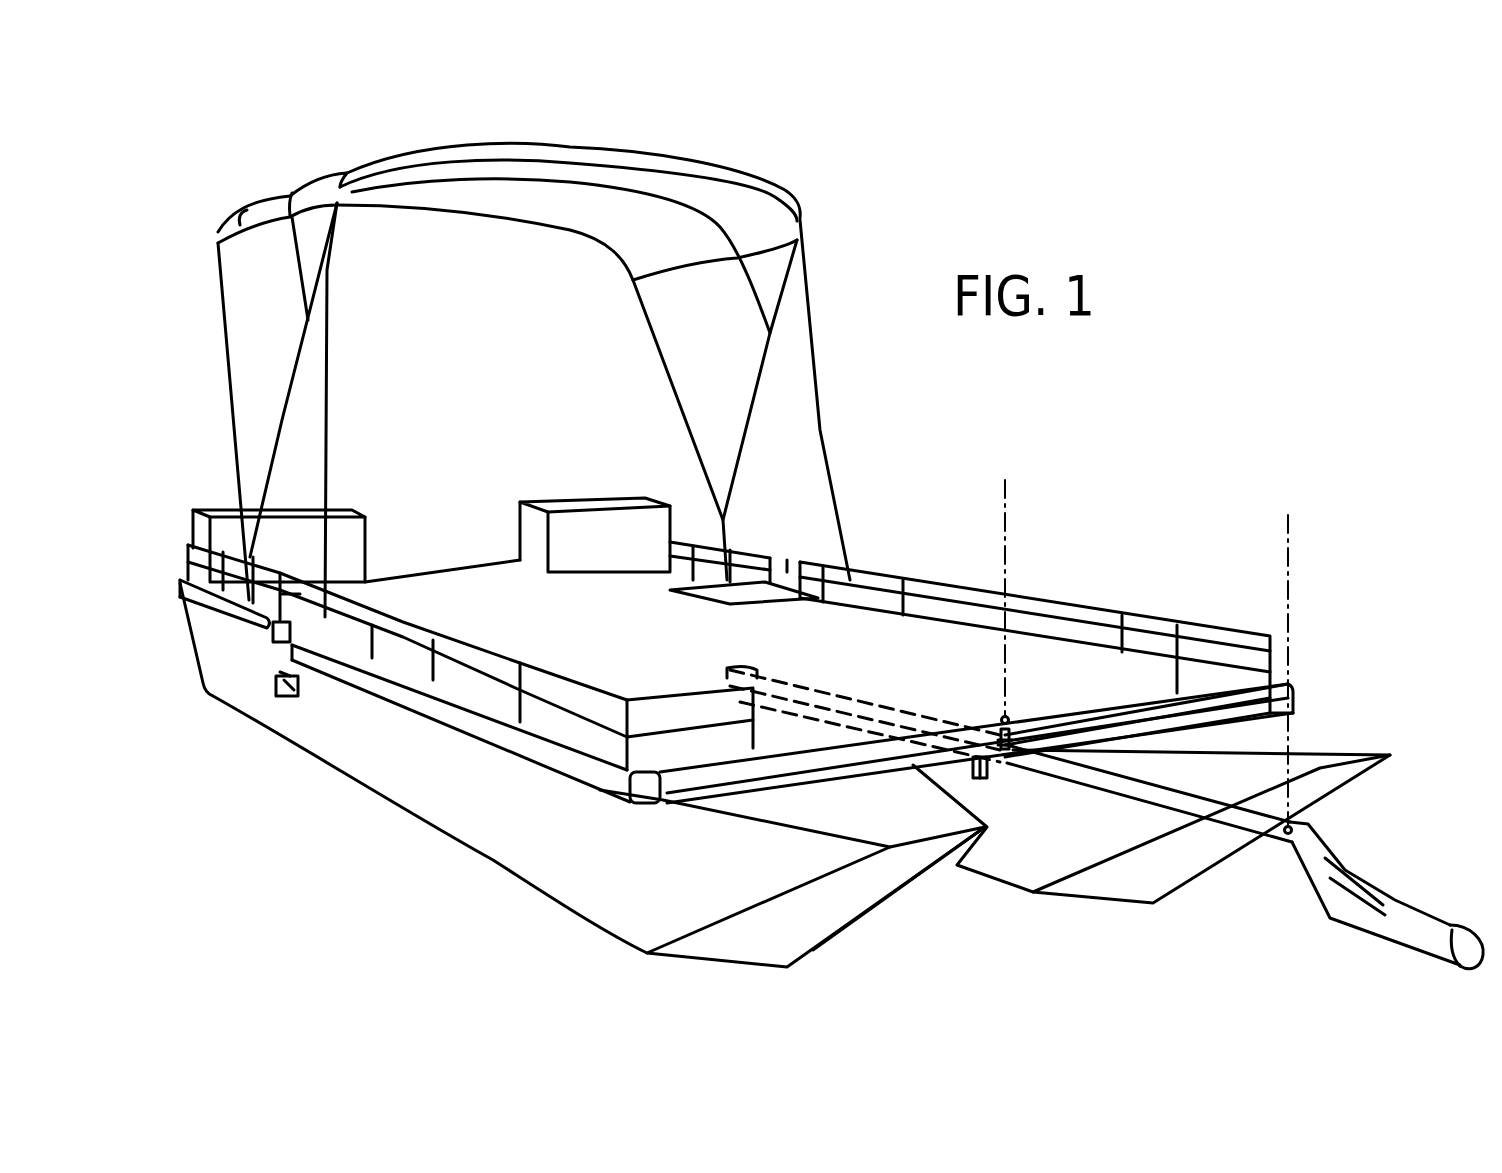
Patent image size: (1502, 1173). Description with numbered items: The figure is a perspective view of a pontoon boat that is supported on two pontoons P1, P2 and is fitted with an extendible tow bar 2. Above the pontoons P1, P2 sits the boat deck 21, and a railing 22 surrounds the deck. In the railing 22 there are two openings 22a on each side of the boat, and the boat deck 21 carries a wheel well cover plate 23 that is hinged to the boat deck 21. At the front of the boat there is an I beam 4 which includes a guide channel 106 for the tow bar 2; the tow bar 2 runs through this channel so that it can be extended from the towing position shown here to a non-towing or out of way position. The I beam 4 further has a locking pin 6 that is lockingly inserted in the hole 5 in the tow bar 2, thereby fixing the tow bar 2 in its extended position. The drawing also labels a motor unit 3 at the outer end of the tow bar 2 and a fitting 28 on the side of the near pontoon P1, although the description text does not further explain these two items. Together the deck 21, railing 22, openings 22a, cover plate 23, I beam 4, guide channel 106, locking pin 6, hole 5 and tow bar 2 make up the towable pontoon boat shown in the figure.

The extendible tow bar 2 is at (1210, 830).
The outboard motor 3 is at (1465, 928).
The I beam 4 is at (1237, 710).
The hole 5 is at (1297, 827).
The locking pin 6 is at (1003, 750).
The boat deck 21 is at (610, 640).
The railing 22 is at (420, 622).
The openings 22a is at (288, 592).
The wheel well cover plate 23 is at (740, 593).
The fitting 28 is at (290, 700).
The guide channel 106 is at (975, 762).
The pontoon P1 is at (695, 880).
The pontoon P2 is at (1055, 845).